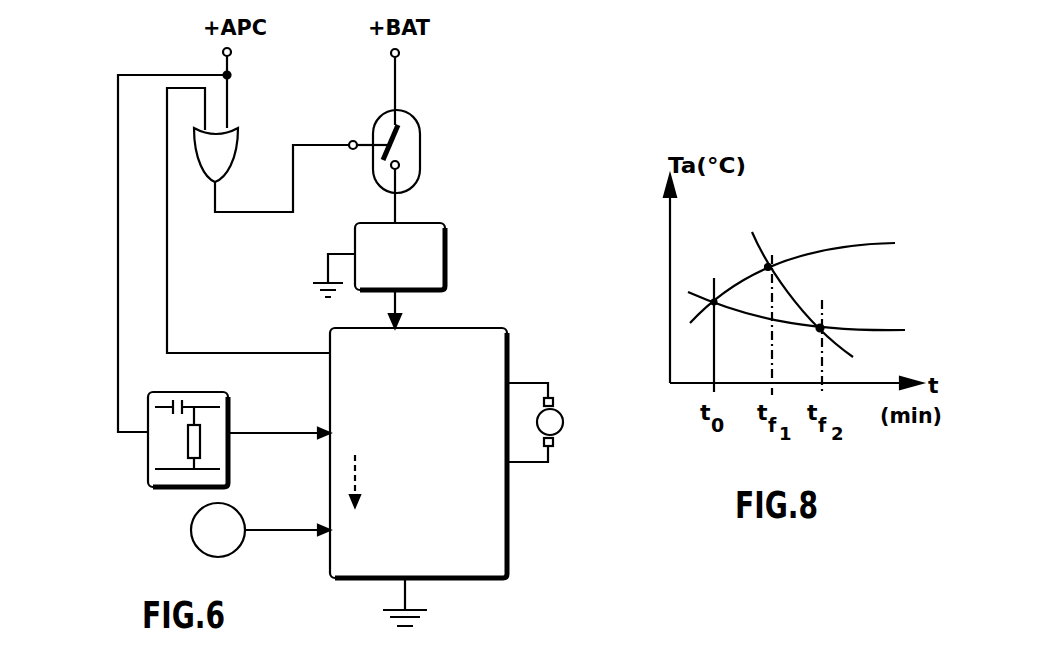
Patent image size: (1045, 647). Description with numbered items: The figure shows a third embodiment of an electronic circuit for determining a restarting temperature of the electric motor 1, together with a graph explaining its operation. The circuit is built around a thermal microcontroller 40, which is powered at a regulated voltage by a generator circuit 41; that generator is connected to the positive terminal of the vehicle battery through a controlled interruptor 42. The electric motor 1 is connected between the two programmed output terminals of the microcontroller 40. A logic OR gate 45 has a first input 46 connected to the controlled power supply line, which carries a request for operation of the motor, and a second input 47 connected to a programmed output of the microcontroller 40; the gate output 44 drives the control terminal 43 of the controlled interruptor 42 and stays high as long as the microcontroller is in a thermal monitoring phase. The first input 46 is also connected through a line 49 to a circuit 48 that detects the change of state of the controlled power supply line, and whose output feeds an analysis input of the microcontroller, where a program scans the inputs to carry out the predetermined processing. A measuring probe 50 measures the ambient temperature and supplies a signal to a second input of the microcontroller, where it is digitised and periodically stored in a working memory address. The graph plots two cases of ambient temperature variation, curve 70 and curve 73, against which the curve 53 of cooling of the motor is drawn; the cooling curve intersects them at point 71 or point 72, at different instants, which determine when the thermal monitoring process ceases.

In FIG. 6, the electric motor 1 is at (578, 416).
In FIG. 6, the thermal microcontroller 40 is at (450, 328).
In FIG. 6, the generator circuit 41 is at (445, 262).
In FIG. 6, the controlled interruptor 42 is at (405, 147).
In FIG. 6, the control terminal 43 is at (353, 140).
In FIG. 6, the output 44 is at (215, 193).
In FIG. 6, the logic OR gate 45 is at (238, 158).
In FIG. 6, the first input 46 is at (228, 106).
In FIG. 6, the second input 47 is at (205, 118).
In FIG. 6, the circuit 48 is at (230, 418).
In FIG. 6, the line 49 is at (112, 312).
In FIG. 6, the measuring probe 50 is at (222, 557).
In FIG. 8, the curve of cooling of the motor 53 is at (793, 294).
In FIG. 8, the ambient temperature variation curve 70 is at (803, 254).
In FIG. 8, the intersection point 71 is at (764, 266).
In FIG. 8, the intersection point 72 is at (834, 320).
In FIG. 8, the ambient temperature variation curve 73 is at (862, 333).